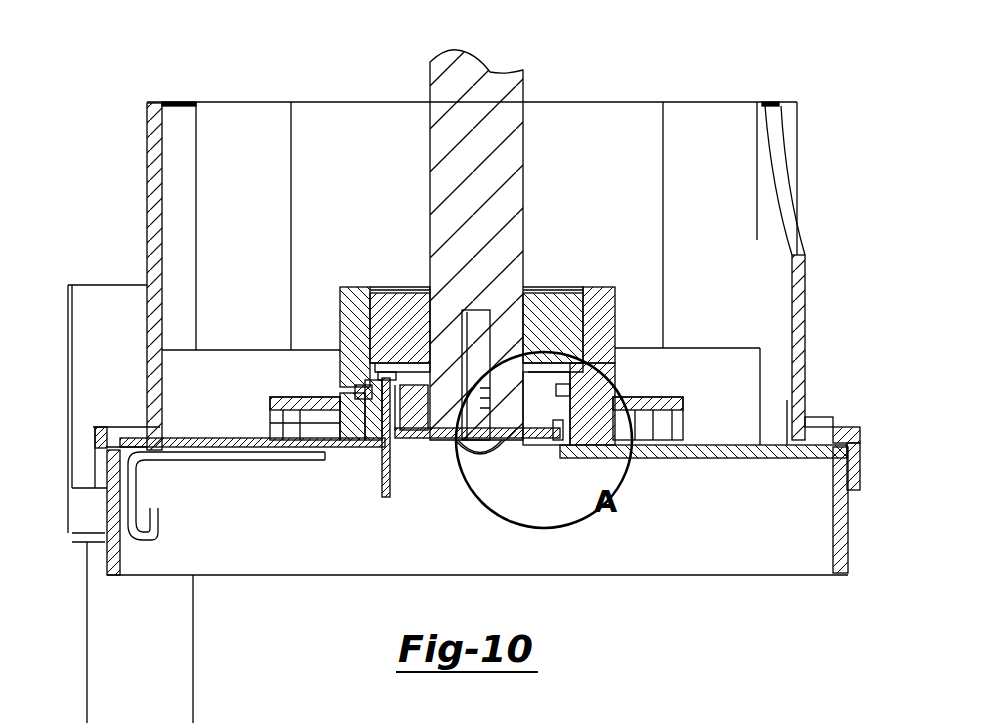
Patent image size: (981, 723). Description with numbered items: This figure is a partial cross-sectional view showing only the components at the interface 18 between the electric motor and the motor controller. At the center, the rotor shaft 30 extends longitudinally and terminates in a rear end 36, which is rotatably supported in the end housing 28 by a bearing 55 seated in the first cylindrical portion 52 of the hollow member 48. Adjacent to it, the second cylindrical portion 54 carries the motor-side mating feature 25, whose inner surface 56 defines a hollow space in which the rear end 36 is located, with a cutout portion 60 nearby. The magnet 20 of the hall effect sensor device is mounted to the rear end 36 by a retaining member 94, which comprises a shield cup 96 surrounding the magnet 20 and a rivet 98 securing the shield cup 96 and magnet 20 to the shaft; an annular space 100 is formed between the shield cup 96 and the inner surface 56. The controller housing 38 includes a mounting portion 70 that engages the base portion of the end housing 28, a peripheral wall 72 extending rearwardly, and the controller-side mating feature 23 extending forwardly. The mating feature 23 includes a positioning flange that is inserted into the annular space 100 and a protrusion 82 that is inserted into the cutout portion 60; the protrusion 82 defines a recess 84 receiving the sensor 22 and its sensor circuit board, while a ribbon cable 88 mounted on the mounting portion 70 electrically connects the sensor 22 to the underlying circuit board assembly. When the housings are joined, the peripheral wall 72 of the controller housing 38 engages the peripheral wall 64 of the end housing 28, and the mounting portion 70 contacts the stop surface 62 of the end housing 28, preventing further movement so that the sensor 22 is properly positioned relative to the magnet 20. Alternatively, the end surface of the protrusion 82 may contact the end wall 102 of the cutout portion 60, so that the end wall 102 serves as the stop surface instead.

The interface 18 is at (66, 446).
The magnet 20 is at (512, 442).
The sensor 22 is at (396, 440).
The mating feature 23 is at (360, 416).
The mating feature 25 is at (565, 378).
The end housing 28 is at (146, 100).
The rotor shaft 30 is at (487, 231).
The rear end 36 is at (455, 158).
The controller housing 38 is at (509, 549).
The hollow member 48 is at (455, 319).
The first cylindrical portion 52 is at (338, 313).
The second cylindrical portion 54 is at (338, 363).
The bearing 55 is at (563, 310).
The inner surface 56 is at (560, 397).
The cutout portion 60 is at (393, 378).
The stop surface 62 is at (483, 456).
The peripheral wall 64 is at (860, 452).
The mounting portion 70 is at (732, 444).
The peripheral wall 72 is at (840, 577).
The protrusion 82 is at (362, 428).
The recess 84 is at (388, 445).
The ribbon cable 88 is at (222, 456).
The retaining member 94 is at (498, 458).
The shield cup 96 is at (570, 392).
The rivet 98 is at (470, 442).
The annular space 100 is at (560, 432).
The end wall 102 is at (356, 392).